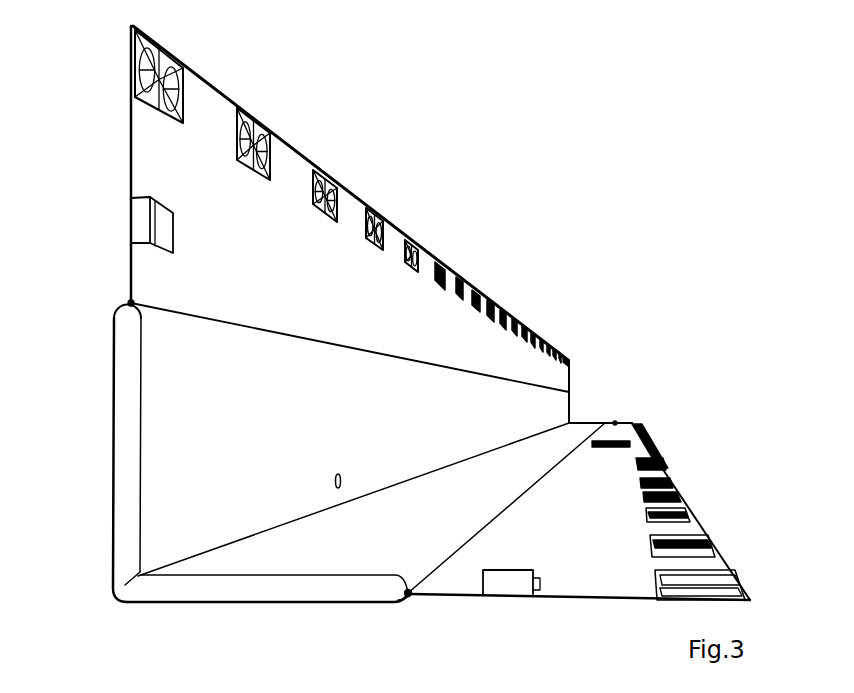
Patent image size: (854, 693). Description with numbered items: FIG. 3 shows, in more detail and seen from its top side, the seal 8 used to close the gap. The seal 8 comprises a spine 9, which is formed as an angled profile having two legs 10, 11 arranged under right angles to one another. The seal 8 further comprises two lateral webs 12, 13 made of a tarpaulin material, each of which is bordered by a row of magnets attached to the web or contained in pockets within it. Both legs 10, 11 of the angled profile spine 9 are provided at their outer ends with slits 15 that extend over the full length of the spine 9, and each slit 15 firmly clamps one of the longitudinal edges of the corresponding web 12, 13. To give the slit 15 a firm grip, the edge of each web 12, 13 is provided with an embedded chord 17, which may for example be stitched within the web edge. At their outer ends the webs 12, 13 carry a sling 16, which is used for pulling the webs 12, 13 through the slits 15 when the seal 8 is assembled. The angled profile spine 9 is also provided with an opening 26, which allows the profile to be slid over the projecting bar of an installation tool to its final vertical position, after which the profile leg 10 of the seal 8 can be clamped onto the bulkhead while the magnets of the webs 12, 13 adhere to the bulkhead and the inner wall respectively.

The seal 8 is at (527, 247).
The spine 9 is at (120, 512).
The leg 10 is at (113, 418).
The leg 11 is at (256, 590).
The lateral web 12 is at (148, 147).
The lateral web 13 is at (585, 582).
The slit 15 is at (126, 317).
The sling 16 is at (142, 216).
The embedded chord 17 is at (128, 301).
The opening 26 is at (336, 490).